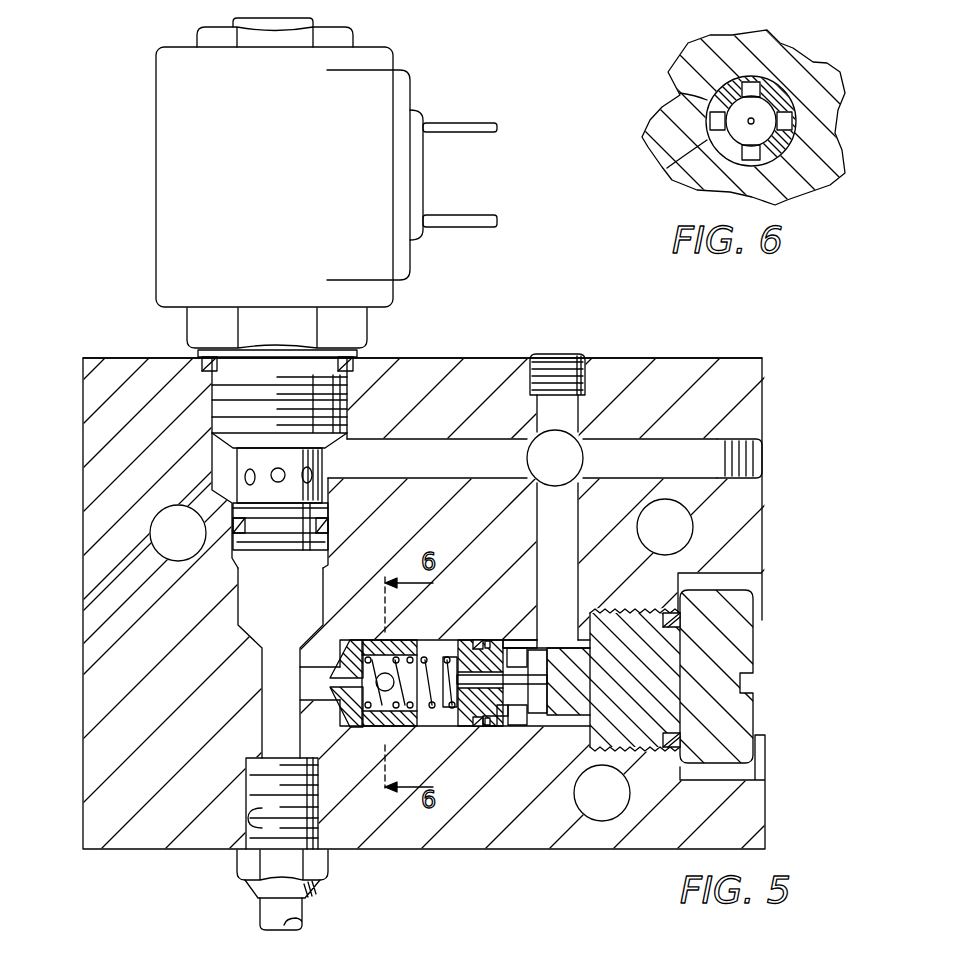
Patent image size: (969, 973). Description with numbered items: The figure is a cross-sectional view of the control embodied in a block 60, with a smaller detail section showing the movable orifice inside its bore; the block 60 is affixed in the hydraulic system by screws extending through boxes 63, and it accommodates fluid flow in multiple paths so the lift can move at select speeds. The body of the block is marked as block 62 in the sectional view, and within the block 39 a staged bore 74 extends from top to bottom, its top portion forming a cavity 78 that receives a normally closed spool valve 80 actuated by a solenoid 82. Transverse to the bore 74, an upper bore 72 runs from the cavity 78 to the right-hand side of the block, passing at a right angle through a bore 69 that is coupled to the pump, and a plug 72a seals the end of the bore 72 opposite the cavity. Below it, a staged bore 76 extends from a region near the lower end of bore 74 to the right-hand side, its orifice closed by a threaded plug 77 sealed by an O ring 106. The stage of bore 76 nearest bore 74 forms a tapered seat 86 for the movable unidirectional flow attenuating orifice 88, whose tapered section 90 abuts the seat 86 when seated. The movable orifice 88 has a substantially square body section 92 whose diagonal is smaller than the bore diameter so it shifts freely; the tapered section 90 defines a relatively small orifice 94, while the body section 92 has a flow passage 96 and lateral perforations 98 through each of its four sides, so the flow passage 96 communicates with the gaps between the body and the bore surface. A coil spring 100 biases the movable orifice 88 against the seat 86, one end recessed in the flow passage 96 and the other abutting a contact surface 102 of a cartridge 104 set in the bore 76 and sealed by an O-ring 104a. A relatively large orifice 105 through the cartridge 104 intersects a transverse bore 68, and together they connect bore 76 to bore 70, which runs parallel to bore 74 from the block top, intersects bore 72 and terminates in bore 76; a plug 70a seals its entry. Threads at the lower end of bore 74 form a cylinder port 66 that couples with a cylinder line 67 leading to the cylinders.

In FIG. 5, the block 60 is at (128, 860).
In FIG. 5, the valve body block 62 is at (95, 614).
In FIG. 6, the valve body block 62 is at (683, 63).
In FIG. 5, the boxes 63 is at (165, 538).
In FIG. 5, the cylinder port 66 is at (248, 828).
In FIG. 5, the cylinder line 67 is at (260, 908).
In FIG. 5, the transverse bore 68 is at (537, 698).
In FIG. 5, the bore 69 is at (573, 455).
In FIG. 5, the bore 70 is at (572, 534).
In FIG. 5, the plug 70a is at (556, 362).
In FIG. 5, the upper bore 72 is at (522, 458).
In FIG. 5, the plug 72a is at (755, 452).
In FIG. 5, the staged bore 74 is at (280, 663).
In FIG. 5, the staged bore 76 is at (443, 708).
In FIG. 6, the staged bore 76 is at (665, 172).
In FIG. 5, the threaded plug 77 is at (747, 650).
In FIG. 5, the cavity 78 is at (223, 477).
In FIG. 5, the spool valve 80 is at (322, 415).
In FIG. 5, the solenoid 82 is at (157, 170).
In FIG. 5, the block 39 is at (490, 357).
In FIG. 5, the tapered seat 86 is at (378, 712).
In FIG. 5, the movable orifice 88 is at (399, 708).
In FIG. 6, the movable orifice 88 is at (792, 78).
In FIG. 5, the tapered section 90 is at (338, 706).
In FIG. 5, the body section 92 is at (380, 660).
In FIG. 6, the body section 92 is at (730, 72).
In FIG. 5, the orifice 94 is at (350, 652).
In FIG. 6, the orifice 94 is at (751, 121).
In FIG. 5, the flow passage 96 is at (390, 633).
In FIG. 6, the flow passage 96 is at (737, 110).
In FIG. 5, the lateral perforations 98 is at (390, 730).
In FIG. 6, the lateral perforations 98 is at (783, 118).
In FIG. 5, the coil spring 100 is at (447, 640).
In FIG. 5, the contact surface 102 is at (523, 647).
In FIG. 5, the cartridge 104 is at (502, 712).
In FIG. 5, the O-ring 104a is at (485, 728).
In FIG. 5, the orifice 105 is at (512, 714).
In FIG. 5, the O ring 106 is at (683, 737).